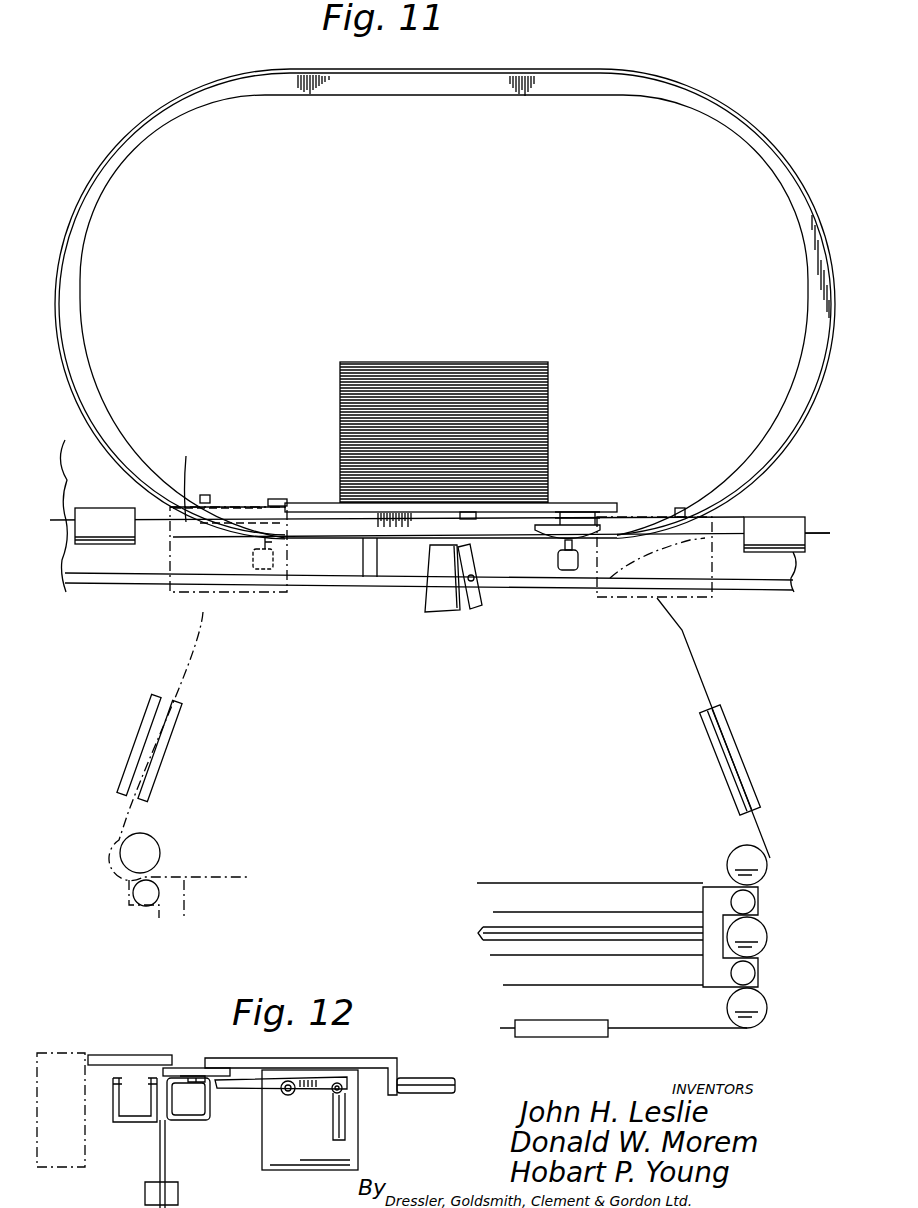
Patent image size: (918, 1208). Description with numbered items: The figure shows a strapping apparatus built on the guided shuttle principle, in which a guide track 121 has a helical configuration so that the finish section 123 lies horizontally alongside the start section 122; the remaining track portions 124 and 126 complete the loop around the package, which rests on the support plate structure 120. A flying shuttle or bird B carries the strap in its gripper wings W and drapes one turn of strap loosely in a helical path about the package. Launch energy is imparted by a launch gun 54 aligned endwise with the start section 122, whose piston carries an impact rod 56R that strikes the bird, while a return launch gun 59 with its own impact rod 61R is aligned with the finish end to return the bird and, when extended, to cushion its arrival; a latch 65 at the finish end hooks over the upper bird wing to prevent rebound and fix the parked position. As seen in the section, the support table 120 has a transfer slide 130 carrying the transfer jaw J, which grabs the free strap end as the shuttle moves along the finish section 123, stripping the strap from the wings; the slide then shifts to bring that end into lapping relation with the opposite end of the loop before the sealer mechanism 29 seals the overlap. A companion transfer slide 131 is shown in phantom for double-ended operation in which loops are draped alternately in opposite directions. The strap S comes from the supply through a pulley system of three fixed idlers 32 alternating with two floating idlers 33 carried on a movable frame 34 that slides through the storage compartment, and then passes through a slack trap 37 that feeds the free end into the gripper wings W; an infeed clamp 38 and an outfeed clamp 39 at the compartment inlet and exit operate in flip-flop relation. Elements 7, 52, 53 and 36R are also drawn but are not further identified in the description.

In FIG. 11, the guide track 121 is at (737, 106).
In FIG. 11, the conveyor top run 126 is at (459, 97).
In FIG. 11, the conveyor inner rail 124 is at (80, 254).
In FIG. 11, the support plate structure 120 is at (549, 503).
In FIG. 12, the support plate structure 120 is at (320, 1058).
In FIG. 11, the gripper wings W is at (580, 504).
In FIG. 12, the gripper wings W is at (192, 1066).
In FIG. 11, the feed path section 7 is at (198, 712).
In FIG. 11, the return launch gun 59 is at (122, 506).
In FIG. 11, the impact rod 61R is at (222, 477).
In FIG. 11, the latch 65 is at (258, 500).
In FIG. 11, the stop block 53 is at (276, 550).
In FIG. 11, the sealer mechanism 29 is at (424, 590).
In FIG. 12, the sealer mechanism 29 is at (158, 1145).
In FIG. 11, the start section 122 is at (478, 535).
In FIG. 12, the start section 122 is at (140, 1122).
In FIG. 11, the shuttle B is at (553, 540).
In FIG. 12, the shuttle B is at (205, 1125).
In FIG. 11, the holder block 52 is at (598, 548).
In FIG. 11, the slack trap 37 is at (706, 597).
In FIG. 11, the impact rod 56R is at (700, 532).
In FIG. 11, the launch gun 54 is at (770, 517).
In FIG. 11, the sheet S is at (680, 638).
In FIG. 11, the outfeed clamp 39 is at (740, 750).
In FIG. 11, the fixed idlers 32 is at (757, 866).
In FIG. 11, the floating idlers 33 is at (747, 902).
In FIG. 11, the movable frame 34 is at (715, 895).
In FIG. 11, the right feed bar 36R is at (573, 935).
In FIG. 11, the infeed clamp 38 is at (566, 1040).
In FIG. 12, the companion transfer slide 131 is at (75, 1053).
In FIG. 12, the finish section 123 is at (194, 1127).
In FIG. 12, the transfer jaw J is at (255, 1085).
In FIG. 12, the transfer slide 130 is at (364, 1102).